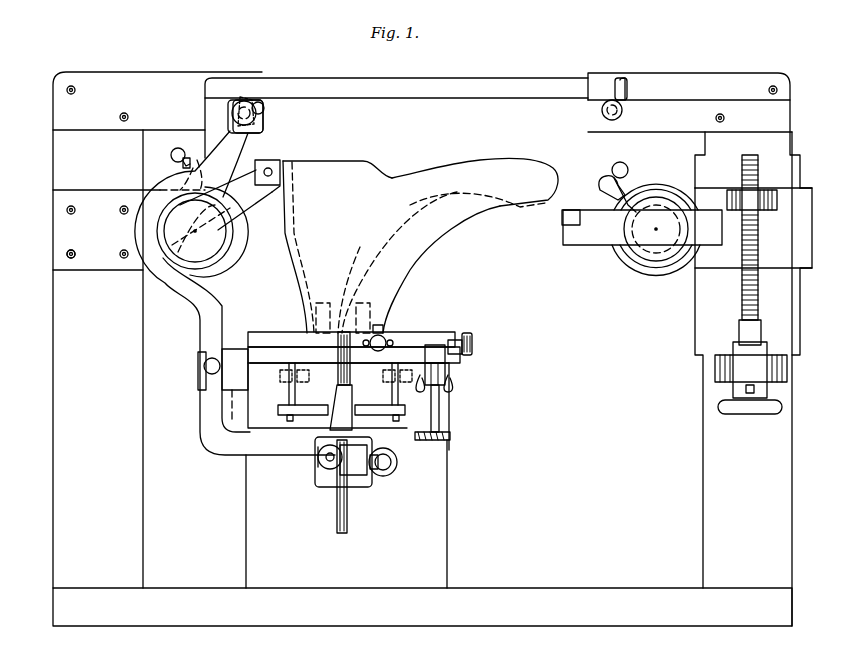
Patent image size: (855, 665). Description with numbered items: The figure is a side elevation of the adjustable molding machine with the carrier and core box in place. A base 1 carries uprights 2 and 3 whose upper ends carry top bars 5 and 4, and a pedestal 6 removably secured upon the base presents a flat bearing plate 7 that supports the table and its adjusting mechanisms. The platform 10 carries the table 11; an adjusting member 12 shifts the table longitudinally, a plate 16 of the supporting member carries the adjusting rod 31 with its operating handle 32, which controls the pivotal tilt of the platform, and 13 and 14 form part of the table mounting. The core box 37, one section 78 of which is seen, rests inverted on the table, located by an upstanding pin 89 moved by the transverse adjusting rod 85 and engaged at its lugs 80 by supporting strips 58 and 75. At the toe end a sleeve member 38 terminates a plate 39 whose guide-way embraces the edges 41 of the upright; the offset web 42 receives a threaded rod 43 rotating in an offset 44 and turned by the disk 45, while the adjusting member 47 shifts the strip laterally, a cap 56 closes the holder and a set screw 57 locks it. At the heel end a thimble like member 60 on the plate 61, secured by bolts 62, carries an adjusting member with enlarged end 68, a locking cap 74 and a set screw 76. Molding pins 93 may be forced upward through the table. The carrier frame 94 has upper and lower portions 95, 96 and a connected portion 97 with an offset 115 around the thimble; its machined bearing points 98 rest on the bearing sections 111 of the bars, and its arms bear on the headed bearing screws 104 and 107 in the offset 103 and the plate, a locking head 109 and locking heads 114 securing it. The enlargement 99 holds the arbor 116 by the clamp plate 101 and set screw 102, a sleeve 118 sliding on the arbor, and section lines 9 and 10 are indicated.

The base 1 is at (511, 626).
The upright 2 is at (712, 530).
The upright 3 is at (143, 530).
The top bar 4 is at (672, 82).
The top bar 5 is at (165, 80).
The pedestal 6 is at (447, 528).
The bearing plate 7 is at (550, 514).
The section line 9 is at (561, 96).
The platform 10 is at (336, 406).
The table 11 is at (413, 345).
The adjusting member 12 is at (452, 340).
The adjusting knob 13 is at (470, 354).
The slide block 14 is at (439, 340).
The plate 16 is at (446, 404).
The adjusting rod 31 is at (446, 425).
The operating handle 32 is at (447, 442).
The core box 37 is at (391, 247).
The sleeve member 38 is at (662, 195).
The plate 39 is at (704, 255).
The edges 41 is at (695, 328).
The offset web 42 is at (762, 190).
The threaded rod 43 is at (760, 306).
The offset 44 is at (745, 368).
The operating disk or wheel 45 is at (720, 407).
The adjusting member 47 is at (640, 270).
The cap 56 is at (650, 262).
The set screw 57 is at (622, 192).
The strip 58 is at (592, 240).
The thimble like member 60 is at (230, 255).
The plate 61 is at (91, 203).
The bolts 62 is at (66, 256).
The enlarged end 68 is at (228, 266).
The locking cap 74 is at (238, 243).
The supporting strip 75 is at (243, 206).
The set screw 76 is at (180, 164).
The core box section 78 is at (440, 168).
The lugs 80 is at (280, 163).
The adjusting rod 85 is at (382, 336).
The upstanding pin 89 is at (377, 325).
The molding pins 93 is at (300, 384).
The frame 94 is at (203, 445).
The upper portion 95 is at (268, 456).
The lower portion 96 is at (400, 94).
The connected portion 97 is at (205, 378).
The bearing points 98 is at (228, 118).
The combined bearing and weight 99 is at (328, 482).
The clamp plate 101 is at (352, 470).
The set screw 102 is at (322, 468).
The offset 103 is at (236, 352).
The headed bearing screw 104 is at (210, 376).
The second headed bearing screw 107 is at (397, 468).
The locking head 109 is at (392, 480).
The bearing sections 111 is at (264, 118).
The locking heads 114 is at (262, 104).
The offset 115 is at (155, 255).
The arbor 116 is at (400, 205).
The sleeve 118 is at (345, 400).